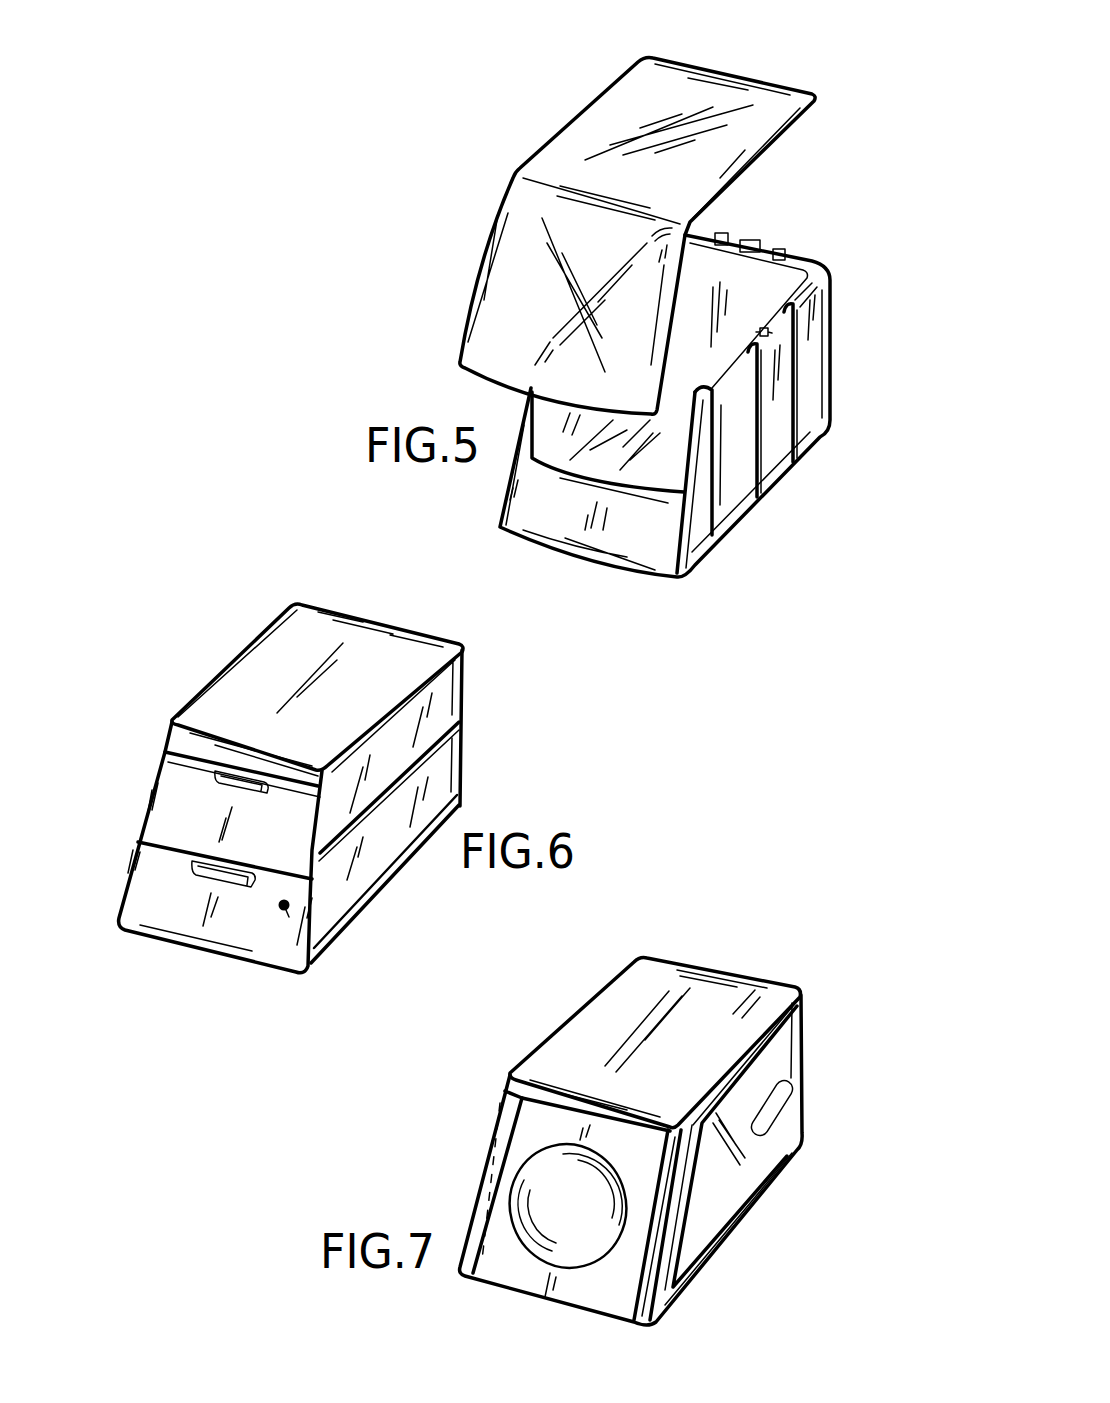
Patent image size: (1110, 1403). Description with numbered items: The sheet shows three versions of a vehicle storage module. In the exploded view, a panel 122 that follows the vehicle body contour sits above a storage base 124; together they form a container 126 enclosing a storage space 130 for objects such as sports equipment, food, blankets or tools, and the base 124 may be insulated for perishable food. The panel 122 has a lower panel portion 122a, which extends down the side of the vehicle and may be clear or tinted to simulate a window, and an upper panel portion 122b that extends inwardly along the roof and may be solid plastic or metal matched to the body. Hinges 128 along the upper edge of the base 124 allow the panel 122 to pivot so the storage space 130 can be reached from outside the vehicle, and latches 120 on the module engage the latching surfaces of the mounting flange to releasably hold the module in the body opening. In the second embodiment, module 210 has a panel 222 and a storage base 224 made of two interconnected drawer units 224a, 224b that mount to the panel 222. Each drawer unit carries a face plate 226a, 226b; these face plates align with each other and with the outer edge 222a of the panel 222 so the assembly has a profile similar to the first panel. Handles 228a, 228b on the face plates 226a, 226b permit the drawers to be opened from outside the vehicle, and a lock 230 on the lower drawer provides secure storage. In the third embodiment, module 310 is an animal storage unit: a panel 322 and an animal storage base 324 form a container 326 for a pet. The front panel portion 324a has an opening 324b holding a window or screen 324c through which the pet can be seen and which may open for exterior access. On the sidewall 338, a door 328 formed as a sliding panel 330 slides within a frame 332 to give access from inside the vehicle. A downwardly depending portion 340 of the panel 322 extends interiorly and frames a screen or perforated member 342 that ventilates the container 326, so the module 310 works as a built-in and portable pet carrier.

In FIG. 5, the latches 120 is at (778, 252).
In FIG. 5, the panel 122 is at (572, 160).
In FIG. 5, the lower panel portion 122a is at (522, 277).
In FIG. 5, the upper panel portion 122b is at (635, 103).
In FIG. 5, the storage base 124 is at (812, 263).
In FIG. 5, the container 126 is at (826, 68).
In FIG. 5, the hinges 128 is at (748, 240).
In FIG. 5, the storage space 130 is at (750, 370).
In FIG. 6, the module 210 is at (283, 585).
In FIG. 6, the panel 222 is at (272, 670).
In FIG. 6, the outer edge 222a is at (173, 733).
In FIG. 6, the storage base 224 is at (495, 708).
In FIG. 6, the drawer unit 224a is at (105, 800).
In FIG. 6, the drawer unit 224b is at (100, 895).
In FIG. 6, the face plate 226a is at (152, 768).
In FIG. 6, the face plate 226b is at (155, 912).
In FIG. 6, the handle 228a is at (262, 790).
In FIG. 6, the handle 228b is at (230, 890).
In FIG. 6, the lock 230 is at (287, 915).
In FIG. 7, the module 310 is at (697, 925).
In FIG. 7, the panel 322 is at (637, 983).
In FIG. 7, the animal storage base 324 is at (815, 1020).
In FIG. 7, the front panel portion 324a is at (497, 1273).
In FIG. 7, the opening 324b is at (577, 1270).
In FIG. 7, the window or screen 324c is at (653, 1313).
In FIG. 7, the container 326 is at (730, 1223).
In FIG. 7, the door 328 is at (783, 1113).
In FIG. 7, the sliding panel 330 is at (787, 1167).
In FIG. 7, the frame 332 is at (712, 1197).
In FIG. 7, the sidewall 338 is at (660, 1292).
In FIG. 7, the downwardly depending portion 340 is at (482, 1123).
In FIG. 7, the screen or perforated member 342 is at (500, 1108).